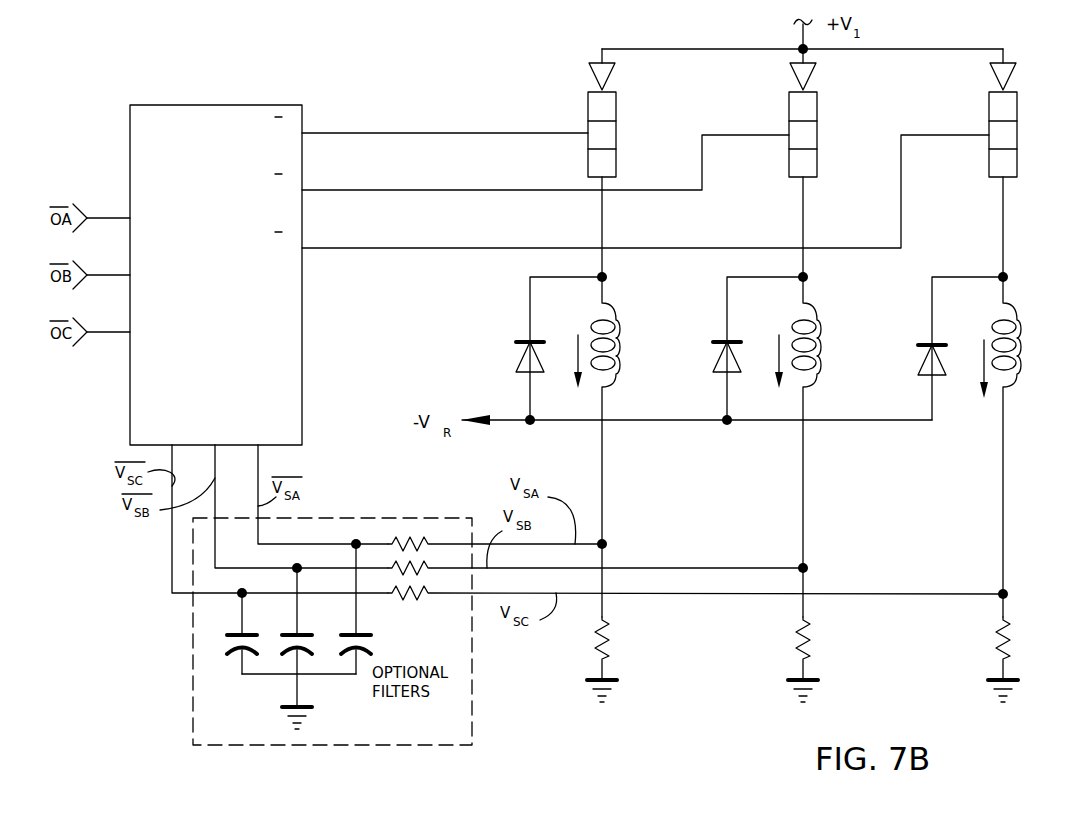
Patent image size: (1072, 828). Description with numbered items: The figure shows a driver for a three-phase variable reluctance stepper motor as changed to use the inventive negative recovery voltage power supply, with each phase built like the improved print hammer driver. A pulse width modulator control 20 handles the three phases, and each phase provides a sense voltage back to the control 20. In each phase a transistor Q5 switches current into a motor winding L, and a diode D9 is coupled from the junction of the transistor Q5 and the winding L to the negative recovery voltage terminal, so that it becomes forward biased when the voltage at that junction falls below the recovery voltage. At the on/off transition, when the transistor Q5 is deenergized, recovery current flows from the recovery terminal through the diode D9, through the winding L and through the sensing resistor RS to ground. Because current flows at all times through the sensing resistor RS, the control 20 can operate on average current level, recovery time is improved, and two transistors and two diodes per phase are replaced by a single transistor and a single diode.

The pulse width modulator control 20 is at (247, 105).
The transistor Q5 is at (617, 145).
The diode D9 is at (517, 357).
The winding L is at (617, 332).
The sensing resistor RS is at (1026, 634).